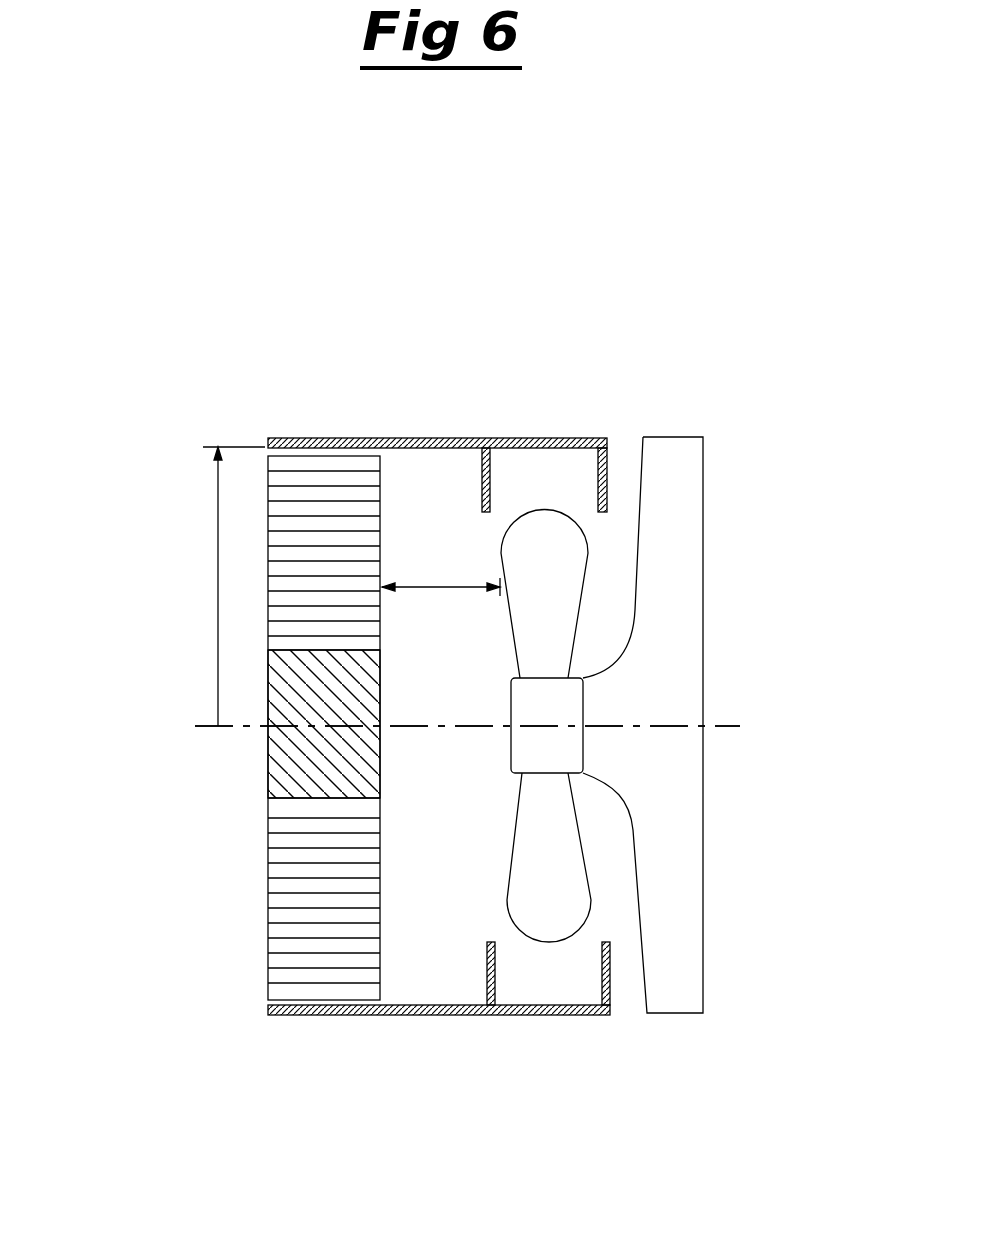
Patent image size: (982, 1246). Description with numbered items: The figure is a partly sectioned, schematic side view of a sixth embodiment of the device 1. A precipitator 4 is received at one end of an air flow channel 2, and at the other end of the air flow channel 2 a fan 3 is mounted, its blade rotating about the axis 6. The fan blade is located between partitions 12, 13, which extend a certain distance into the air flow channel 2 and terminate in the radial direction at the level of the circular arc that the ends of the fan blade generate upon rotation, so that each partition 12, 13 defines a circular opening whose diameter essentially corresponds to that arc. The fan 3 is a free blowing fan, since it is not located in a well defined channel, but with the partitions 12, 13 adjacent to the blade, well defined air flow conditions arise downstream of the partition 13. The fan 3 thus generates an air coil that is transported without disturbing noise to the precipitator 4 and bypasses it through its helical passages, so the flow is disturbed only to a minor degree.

The fan assembly 1 is at (183, 418).
The air flow channel 2 is at (435, 440).
The fan 3 is at (717, 602).
The precipitator 4 is at (272, 952).
The axis of rotation 6 is at (424, 741).
The partition 12 is at (600, 978).
The partition 13 is at (487, 980).